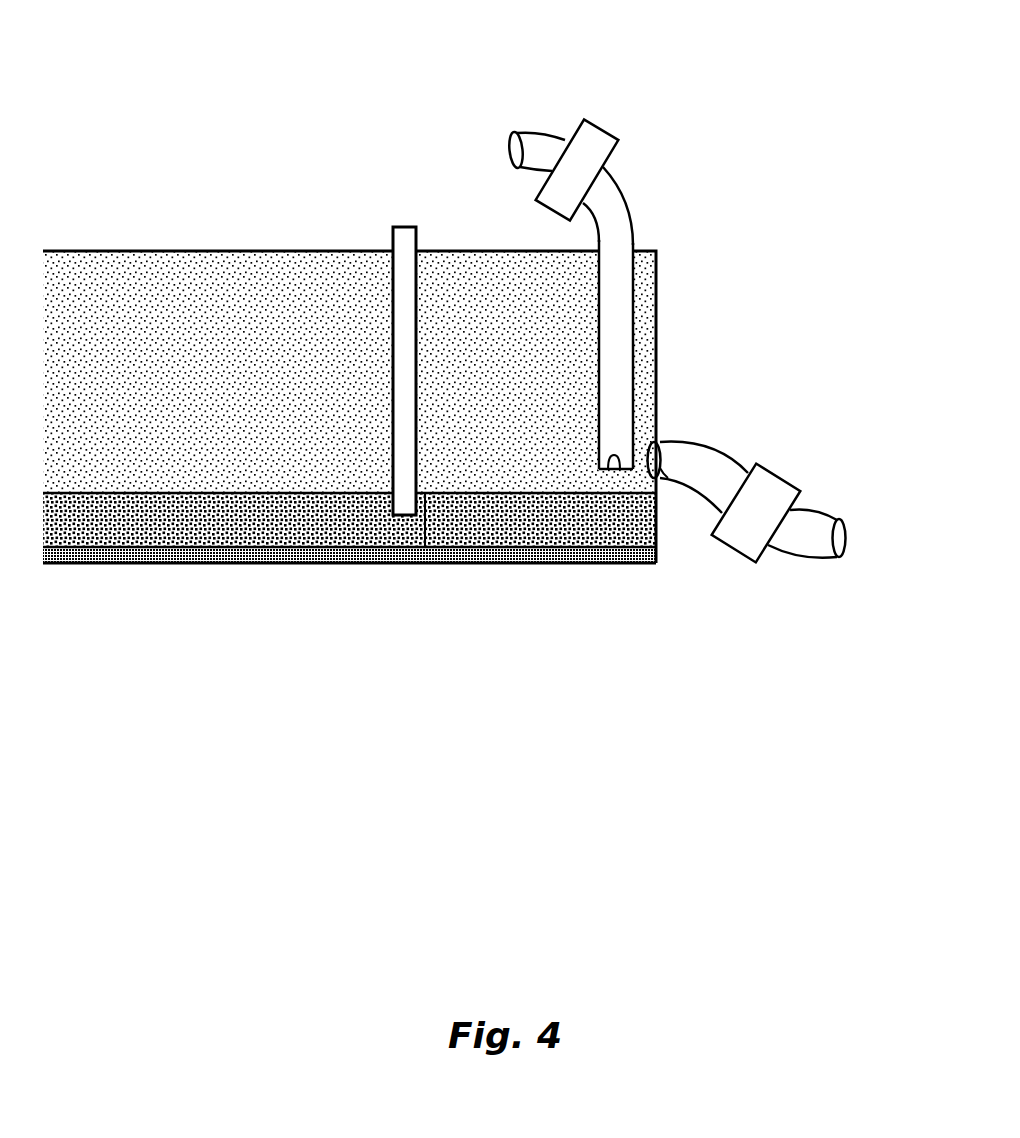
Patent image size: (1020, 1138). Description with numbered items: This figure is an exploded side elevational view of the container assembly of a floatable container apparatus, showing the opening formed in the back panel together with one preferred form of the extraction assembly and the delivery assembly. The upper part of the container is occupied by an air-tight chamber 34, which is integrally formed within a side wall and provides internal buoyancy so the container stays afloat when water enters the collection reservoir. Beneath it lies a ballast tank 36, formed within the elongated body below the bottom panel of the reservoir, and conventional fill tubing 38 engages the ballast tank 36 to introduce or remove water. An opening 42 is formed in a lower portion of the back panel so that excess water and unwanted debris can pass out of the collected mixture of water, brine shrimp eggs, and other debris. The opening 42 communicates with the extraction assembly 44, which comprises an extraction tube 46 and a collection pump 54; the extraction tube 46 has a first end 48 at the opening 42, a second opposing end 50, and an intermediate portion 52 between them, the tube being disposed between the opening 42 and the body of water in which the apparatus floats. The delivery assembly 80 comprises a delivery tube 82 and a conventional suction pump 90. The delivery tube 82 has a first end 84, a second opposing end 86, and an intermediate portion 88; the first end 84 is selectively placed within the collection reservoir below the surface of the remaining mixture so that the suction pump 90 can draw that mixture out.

The air-tight chamber 34 is at (123, 251).
The ballast tank 36 is at (192, 530).
The fill tubing 38 is at (393, 250).
The opening 42 is at (656, 443).
The extraction assembly 44 is at (773, 460).
The extraction tube 46 is at (714, 436).
The first end 48 is at (661, 471).
The second opposing end 50 is at (846, 527).
The intermediate portion 52 is at (706, 446).
The collection pump 54 is at (768, 524).
The delivery assembly 80 is at (563, 315).
The delivery tube 82 is at (626, 199).
The first end 84 is at (618, 470).
The second opposing end 86 is at (511, 137).
The intermediate portion 88 is at (629, 278).
The suction pump 90 is at (577, 169).